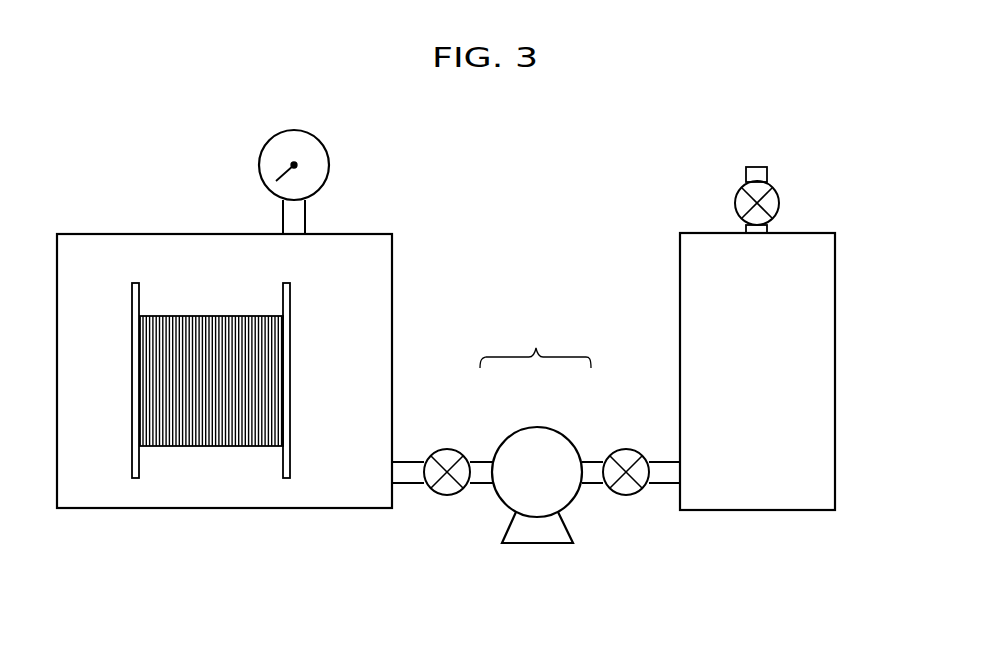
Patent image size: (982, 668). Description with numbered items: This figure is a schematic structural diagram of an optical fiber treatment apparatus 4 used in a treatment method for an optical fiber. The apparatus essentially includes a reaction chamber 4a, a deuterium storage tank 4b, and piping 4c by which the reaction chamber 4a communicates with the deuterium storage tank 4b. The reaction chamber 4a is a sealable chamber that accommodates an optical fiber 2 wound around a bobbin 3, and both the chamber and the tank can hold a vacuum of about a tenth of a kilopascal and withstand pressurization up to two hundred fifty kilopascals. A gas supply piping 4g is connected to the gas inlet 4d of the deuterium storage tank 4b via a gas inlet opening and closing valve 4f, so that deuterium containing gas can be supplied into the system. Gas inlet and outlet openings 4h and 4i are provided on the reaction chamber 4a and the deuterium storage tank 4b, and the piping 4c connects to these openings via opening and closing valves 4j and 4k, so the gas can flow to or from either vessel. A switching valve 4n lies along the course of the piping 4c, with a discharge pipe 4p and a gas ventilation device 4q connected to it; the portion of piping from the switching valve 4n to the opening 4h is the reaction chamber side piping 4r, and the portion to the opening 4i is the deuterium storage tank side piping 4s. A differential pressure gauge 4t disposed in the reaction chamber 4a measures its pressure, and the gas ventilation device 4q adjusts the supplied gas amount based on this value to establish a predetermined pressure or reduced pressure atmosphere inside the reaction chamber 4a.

The optical fiber 2 is at (213, 327).
The bobbin 3 is at (288, 295).
The optical fiber treatment apparatus 4 is at (797, 125).
The reaction chamber 4a is at (393, 282).
The deuterium storage tank 4b is at (837, 298).
The piping 4c is at (522, 469).
The gas inlet 4d is at (768, 230).
The gas inlet opening and closing valve 4f is at (778, 197).
The gas supply piping 4g is at (747, 173).
The gas inlet and outlet opening 4h is at (403, 485).
The gas inlet and outlet opening 4i is at (667, 487).
The opening and closing valve 4j is at (445, 452).
The opening and closing valve 4k is at (624, 452).
The switching valve 4n is at (497, 497).
The discharge pipe 4p is at (557, 528).
The gas ventilation device 4q is at (513, 503).
The reaction chamber side piping 4r is at (478, 470).
The deuterium storage tank side piping 4s is at (593, 470).
The differential pressure gauge 4t is at (310, 143).